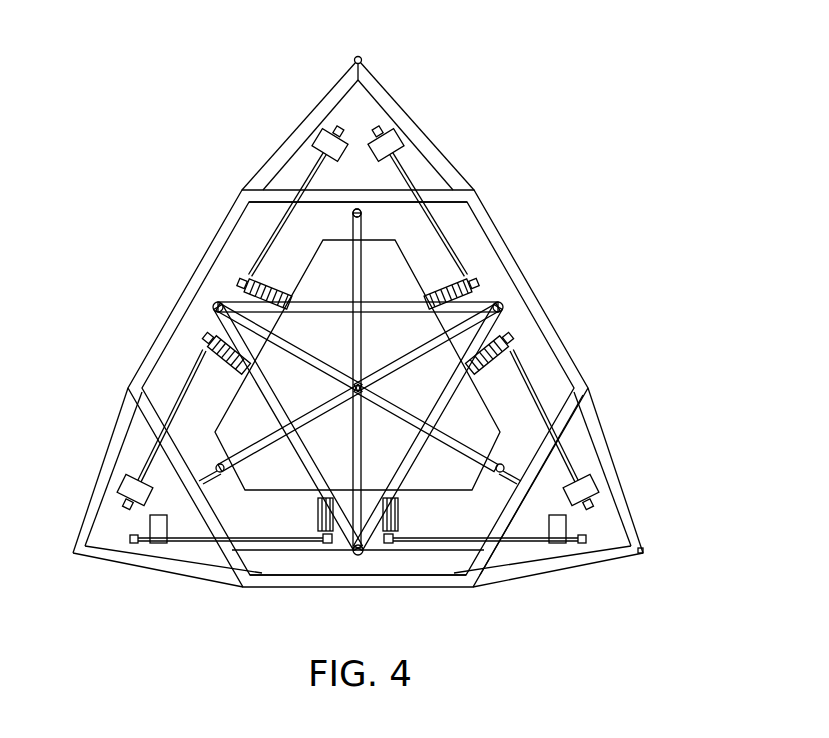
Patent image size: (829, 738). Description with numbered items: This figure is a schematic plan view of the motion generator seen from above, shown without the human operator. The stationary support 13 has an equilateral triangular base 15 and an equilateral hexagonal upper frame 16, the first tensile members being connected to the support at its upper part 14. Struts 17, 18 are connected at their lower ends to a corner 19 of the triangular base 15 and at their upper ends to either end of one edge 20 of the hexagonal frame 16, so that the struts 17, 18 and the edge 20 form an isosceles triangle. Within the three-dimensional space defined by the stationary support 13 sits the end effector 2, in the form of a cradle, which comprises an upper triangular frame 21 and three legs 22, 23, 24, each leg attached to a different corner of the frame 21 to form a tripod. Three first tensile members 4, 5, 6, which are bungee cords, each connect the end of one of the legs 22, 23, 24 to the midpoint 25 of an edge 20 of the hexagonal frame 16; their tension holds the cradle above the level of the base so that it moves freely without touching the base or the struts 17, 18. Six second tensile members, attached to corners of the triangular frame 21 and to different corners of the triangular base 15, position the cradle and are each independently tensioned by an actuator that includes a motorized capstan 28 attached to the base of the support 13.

The end effector 2 is at (512, 320).
The first tensile member 4 is at (520, 472).
The first tensile member 5 is at (198, 468).
The first tensile member 6 is at (352, 212).
The stationary support 13 is at (636, 549).
The upper part 14 is at (226, 543).
The triangular base 15 is at (483, 267).
The hexagonal upper frame 16 is at (390, 583).
The strut 17 is at (414, 124).
The strut 18 is at (287, 143).
The corner 19 is at (362, 57).
The edge 20 is at (387, 195).
The upper triangular frame 21 is at (232, 363).
The leg 22 is at (361, 344).
The leg 23 is at (308, 362).
The leg 24 is at (322, 410).
The midpoint 25 is at (525, 487).
The motorized capstan 28 is at (326, 546).